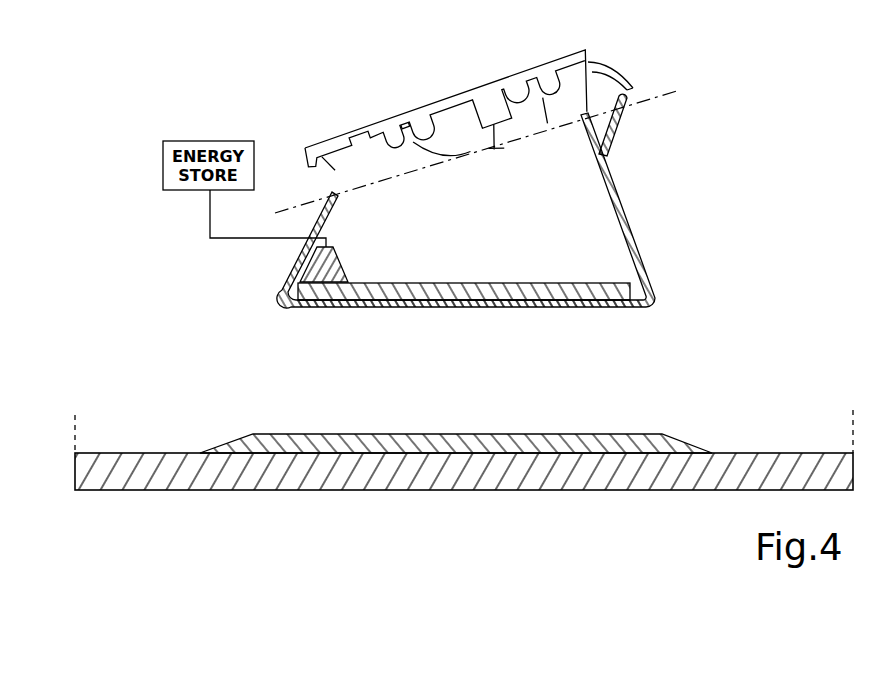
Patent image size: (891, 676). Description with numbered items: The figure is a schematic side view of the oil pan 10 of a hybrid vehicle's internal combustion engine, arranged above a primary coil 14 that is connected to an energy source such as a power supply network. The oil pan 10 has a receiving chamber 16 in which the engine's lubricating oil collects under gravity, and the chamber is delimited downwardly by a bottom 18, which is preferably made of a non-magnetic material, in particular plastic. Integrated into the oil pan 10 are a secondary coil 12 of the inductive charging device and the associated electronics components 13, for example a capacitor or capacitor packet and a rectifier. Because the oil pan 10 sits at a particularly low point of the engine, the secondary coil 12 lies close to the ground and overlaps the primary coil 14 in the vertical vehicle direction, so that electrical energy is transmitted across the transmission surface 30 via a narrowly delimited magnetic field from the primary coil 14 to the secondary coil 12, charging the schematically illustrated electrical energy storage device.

The oil pan 10 is at (631, 238).
The secondary coil 12 is at (610, 300).
The electronics components 13 is at (326, 268).
The primary coil 14 is at (563, 447).
The receiving chamber 16 is at (487, 267).
The bottom 18 is at (407, 306).
The transmission surface 30 is at (490, 304).